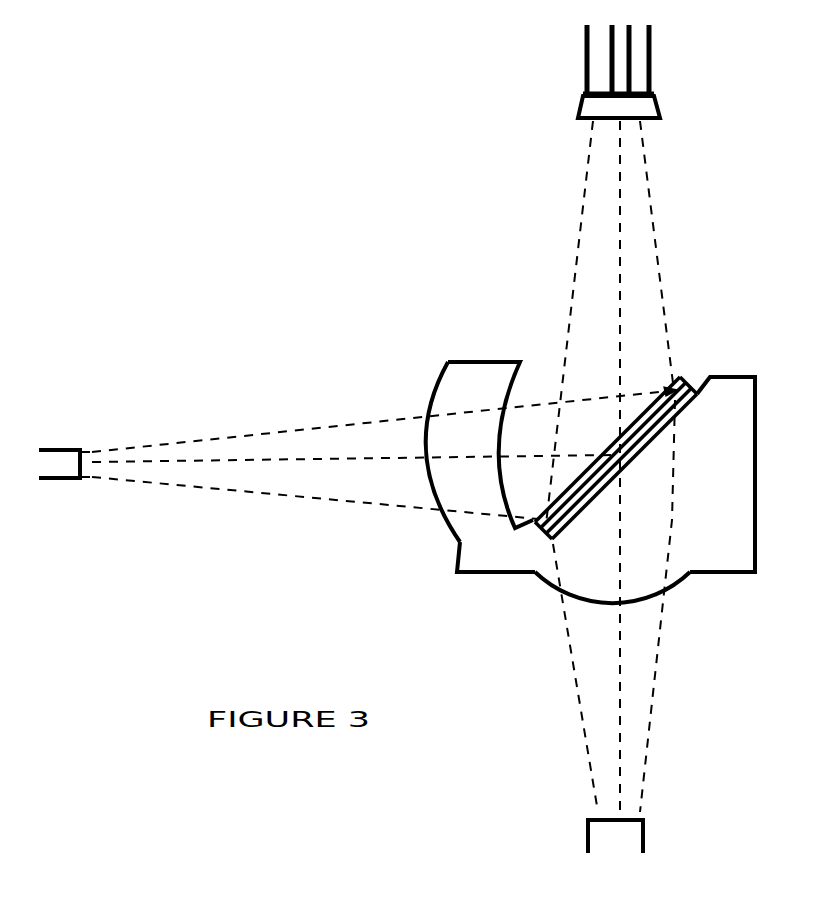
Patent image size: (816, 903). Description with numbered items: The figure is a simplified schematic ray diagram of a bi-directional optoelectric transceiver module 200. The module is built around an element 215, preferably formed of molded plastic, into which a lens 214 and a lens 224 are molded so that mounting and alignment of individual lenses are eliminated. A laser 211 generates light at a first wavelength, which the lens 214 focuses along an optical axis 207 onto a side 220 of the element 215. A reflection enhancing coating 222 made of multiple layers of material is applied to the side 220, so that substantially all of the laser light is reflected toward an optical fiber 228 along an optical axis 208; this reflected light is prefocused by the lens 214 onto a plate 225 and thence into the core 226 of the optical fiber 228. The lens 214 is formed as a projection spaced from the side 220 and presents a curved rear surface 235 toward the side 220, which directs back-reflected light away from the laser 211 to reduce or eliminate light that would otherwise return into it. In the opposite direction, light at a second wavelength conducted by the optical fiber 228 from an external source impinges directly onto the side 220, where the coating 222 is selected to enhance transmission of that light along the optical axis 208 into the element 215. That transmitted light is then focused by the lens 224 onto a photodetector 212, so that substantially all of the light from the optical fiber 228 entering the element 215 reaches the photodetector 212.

The bi-directional optoelectric transceiver module 200 is at (289, 237).
The optical axis 207 is at (321, 527).
The optical axis 208 is at (686, 206).
The laser 211 is at (54, 448).
The photodetector 212 is at (648, 832).
The lens 214 is at (437, 378).
The element 215 is at (559, 486).
The side 220 is at (690, 386).
The reflection enhancing coating 222 is at (608, 438).
The lens 224 is at (680, 584).
The plate 225 is at (657, 106).
The core 226 is at (632, 62).
The optical fiber 228 is at (590, 74).
The rear surface 235 is at (498, 412).